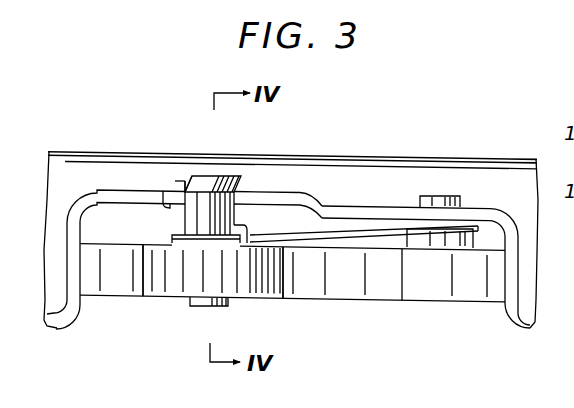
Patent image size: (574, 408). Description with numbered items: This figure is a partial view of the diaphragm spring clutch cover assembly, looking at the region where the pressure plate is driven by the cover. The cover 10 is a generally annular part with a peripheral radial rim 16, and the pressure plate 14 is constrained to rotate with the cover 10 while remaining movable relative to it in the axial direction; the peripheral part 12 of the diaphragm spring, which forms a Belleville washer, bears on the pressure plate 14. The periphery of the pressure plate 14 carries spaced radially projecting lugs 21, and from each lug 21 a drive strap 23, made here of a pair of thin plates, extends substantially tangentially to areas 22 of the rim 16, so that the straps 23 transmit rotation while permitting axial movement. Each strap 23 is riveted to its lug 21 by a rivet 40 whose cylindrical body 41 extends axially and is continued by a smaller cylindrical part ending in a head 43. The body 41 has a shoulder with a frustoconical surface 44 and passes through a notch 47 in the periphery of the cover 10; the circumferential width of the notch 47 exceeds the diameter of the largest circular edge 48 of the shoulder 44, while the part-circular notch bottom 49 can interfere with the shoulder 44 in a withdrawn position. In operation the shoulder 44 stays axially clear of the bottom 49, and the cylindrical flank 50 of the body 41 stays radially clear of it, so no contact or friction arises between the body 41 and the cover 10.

The cover 10 is at (509, 322).
The peripheral part 12 is at (572, 312).
The pressure plate 14 is at (116, 298).
The peripheral radial rim 16 is at (543, 330).
The lugs 21 is at (292, 290).
The areas 22 is at (388, 207).
The drive straps 23 is at (291, 222).
The rivet 40 is at (234, 173).
The cylindrical body 41 is at (201, 198).
The head 43 is at (200, 305).
The frustoconical shoulder 44 is at (182, 183).
The notch 47 is at (166, 206).
The largest diameter circular edge 48 is at (186, 186).
The notch bottom 49 is at (250, 192).
The cylindrical flank 50 is at (247, 313).